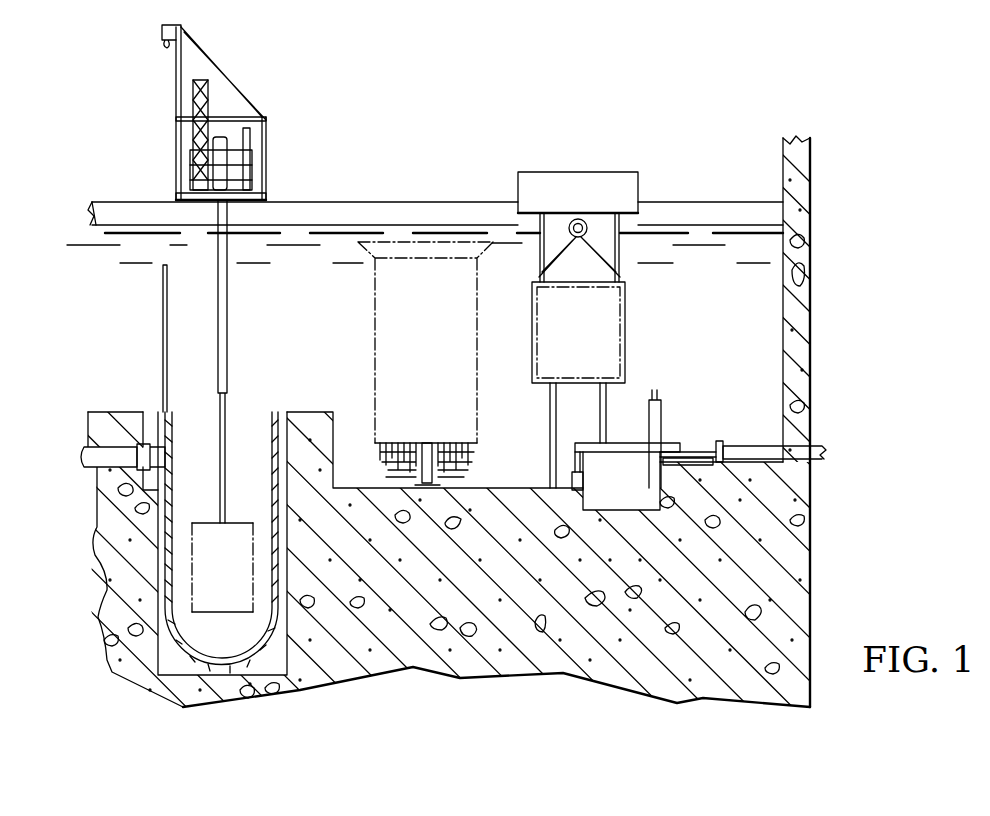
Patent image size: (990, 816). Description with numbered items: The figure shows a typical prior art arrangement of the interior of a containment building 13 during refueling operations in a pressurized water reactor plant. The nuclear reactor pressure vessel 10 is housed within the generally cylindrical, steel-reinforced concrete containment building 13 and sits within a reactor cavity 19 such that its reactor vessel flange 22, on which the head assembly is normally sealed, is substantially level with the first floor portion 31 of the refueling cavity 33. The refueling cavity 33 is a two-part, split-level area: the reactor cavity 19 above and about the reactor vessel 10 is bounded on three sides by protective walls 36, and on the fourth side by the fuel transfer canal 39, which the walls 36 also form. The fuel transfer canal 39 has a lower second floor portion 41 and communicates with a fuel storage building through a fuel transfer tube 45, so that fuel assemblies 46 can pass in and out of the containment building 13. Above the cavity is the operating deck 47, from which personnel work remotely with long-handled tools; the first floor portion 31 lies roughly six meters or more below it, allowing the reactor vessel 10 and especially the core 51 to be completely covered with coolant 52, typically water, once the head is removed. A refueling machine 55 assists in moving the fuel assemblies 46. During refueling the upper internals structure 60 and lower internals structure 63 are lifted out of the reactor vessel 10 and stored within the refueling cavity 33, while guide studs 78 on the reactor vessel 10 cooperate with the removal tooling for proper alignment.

The nuclear reactor pressure vessel 10 is at (232, 665).
The containment building 13 is at (798, 158).
The reactor cavity 19 is at (119, 303).
The reactor vessel flange 22 is at (264, 405).
The first floor portion 31 is at (131, 410).
The refueling cavity 33 is at (303, 303).
The protective walls 36 is at (354, 212).
The fuel transfer canal 39 is at (691, 303).
The second floor portion 41 is at (513, 492).
The fuel transfer tube 45 is at (727, 445).
The fuel assemblies 46 is at (220, 483).
The operating deck 47 is at (148, 200).
The core 51 is at (213, 612).
The coolant 52 is at (765, 268).
The refueling machine 55 is at (176, 95).
The upper internals structure 60 is at (640, 343).
The lower internals structure 63 is at (366, 339).
The guide studs 78 is at (163, 323).